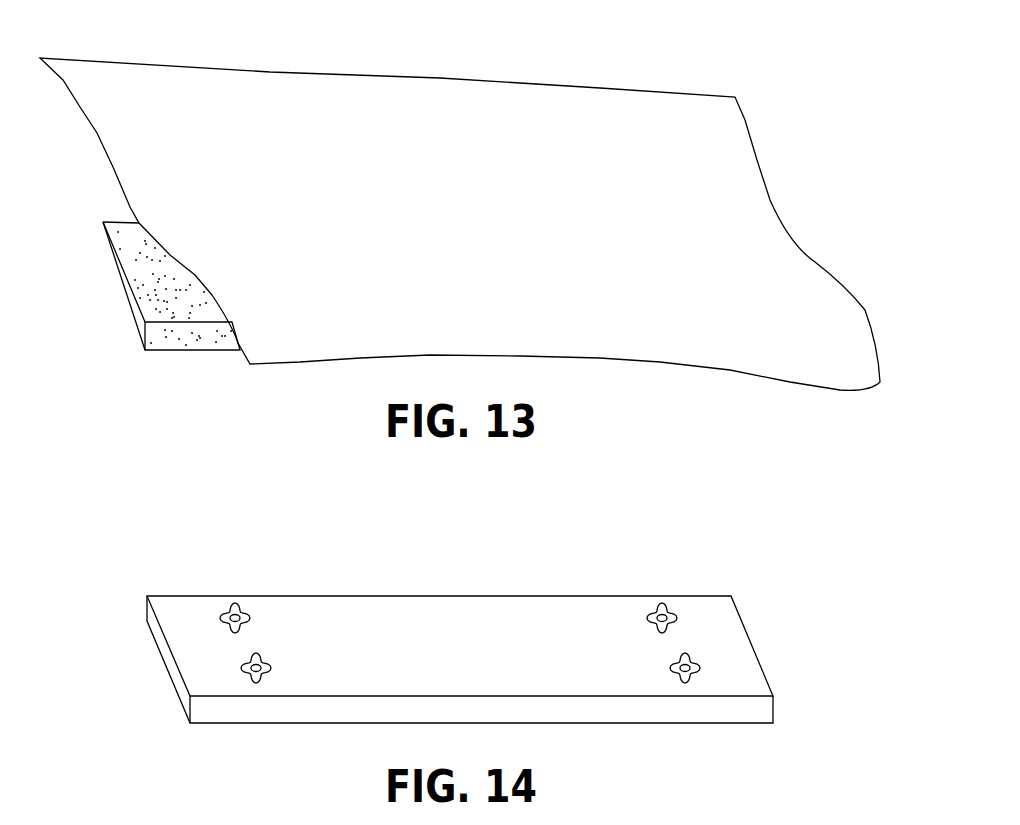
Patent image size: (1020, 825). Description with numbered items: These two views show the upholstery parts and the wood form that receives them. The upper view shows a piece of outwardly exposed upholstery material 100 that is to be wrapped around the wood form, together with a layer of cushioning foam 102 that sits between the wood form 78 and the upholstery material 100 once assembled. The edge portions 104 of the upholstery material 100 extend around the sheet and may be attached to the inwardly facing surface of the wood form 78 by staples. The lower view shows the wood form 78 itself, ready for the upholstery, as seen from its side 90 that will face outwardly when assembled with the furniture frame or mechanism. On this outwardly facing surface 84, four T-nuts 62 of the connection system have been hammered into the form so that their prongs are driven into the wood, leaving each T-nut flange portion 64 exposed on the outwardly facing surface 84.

In FIG. 13, the upholstery material 100 is at (270, 72).
In FIG. 13, the cushioning foam 102 is at (128, 305).
In FIG. 13, the edge portions 104 is at (115, 113).
In FIG. 14, the side 90 is at (468, 552).
In FIG. 14, the outwardly facing surface 84 is at (567, 627).
In FIG. 14, the wood form 78 is at (603, 713).
In FIG. 14, the T-nut 62 is at (237, 607).
In FIG. 14, the flange portion 64 is at (700, 667).